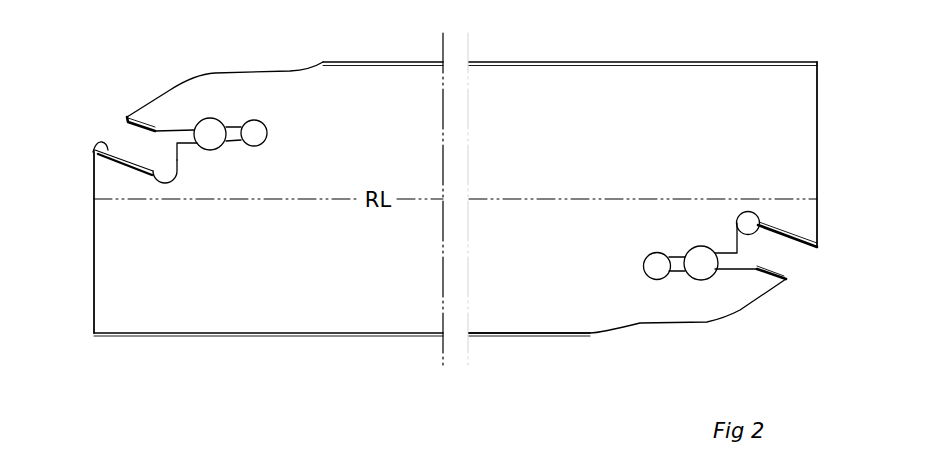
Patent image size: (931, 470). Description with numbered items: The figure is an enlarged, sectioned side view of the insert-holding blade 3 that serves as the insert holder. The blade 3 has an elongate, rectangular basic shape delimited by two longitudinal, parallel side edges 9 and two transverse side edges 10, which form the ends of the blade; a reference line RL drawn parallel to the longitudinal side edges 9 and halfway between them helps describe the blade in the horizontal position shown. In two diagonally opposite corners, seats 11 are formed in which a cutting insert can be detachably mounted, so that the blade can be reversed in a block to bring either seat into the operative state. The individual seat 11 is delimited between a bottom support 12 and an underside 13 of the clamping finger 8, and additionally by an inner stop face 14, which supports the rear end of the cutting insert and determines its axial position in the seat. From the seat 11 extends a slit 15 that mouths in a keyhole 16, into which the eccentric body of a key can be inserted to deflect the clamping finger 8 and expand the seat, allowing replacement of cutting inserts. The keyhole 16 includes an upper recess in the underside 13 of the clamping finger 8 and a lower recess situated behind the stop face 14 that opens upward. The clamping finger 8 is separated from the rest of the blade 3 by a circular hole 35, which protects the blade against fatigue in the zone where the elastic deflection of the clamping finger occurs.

The insert-holding blade 3 is at (185, 338).
The clamping finger 8 is at (176, 62).
The longitudinal side edges 9 is at (387, 60).
The transverse side edges 10 is at (817, 123).
The seat 11 is at (108, 135).
The bottom support 12 is at (93, 152).
The underside of the clamping finger 13 is at (130, 122).
The inner stop face 14 is at (172, 152).
The slit 15 is at (178, 133).
The keyhole 16 is at (208, 138).
The circular hole 35 is at (250, 130).